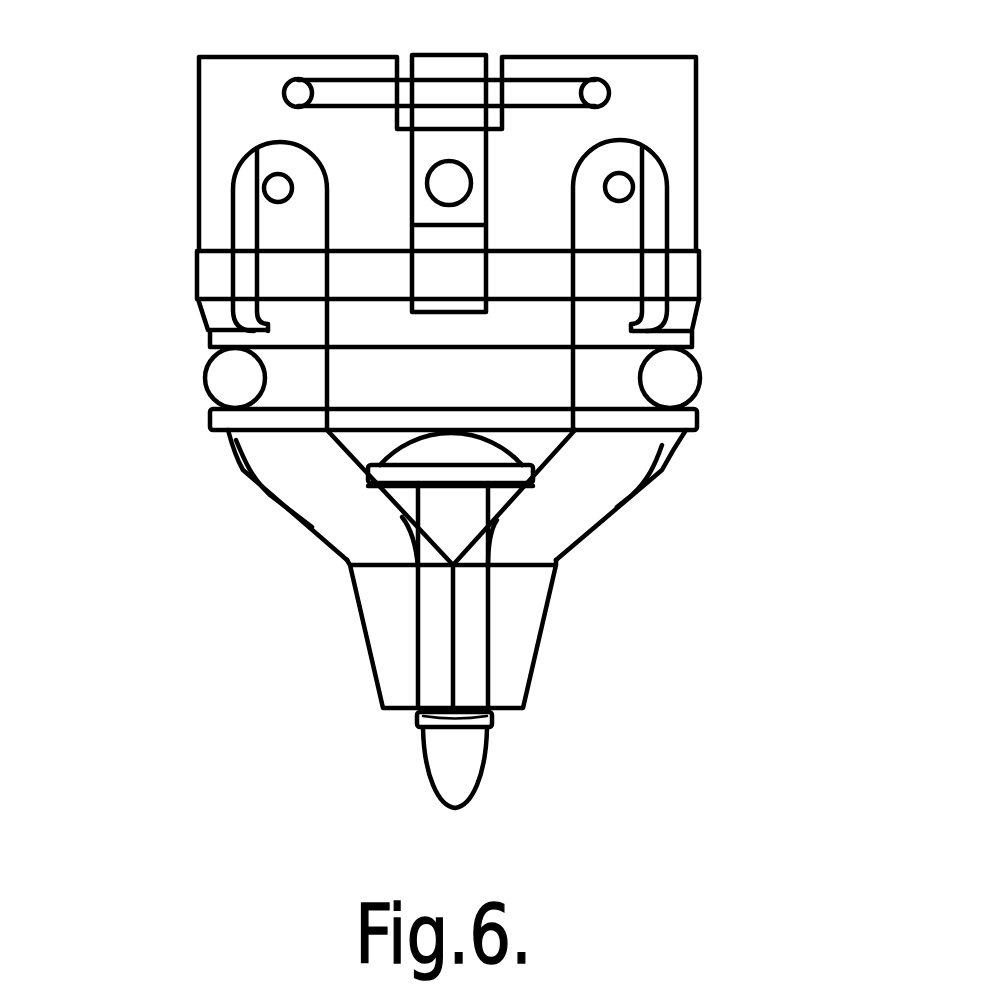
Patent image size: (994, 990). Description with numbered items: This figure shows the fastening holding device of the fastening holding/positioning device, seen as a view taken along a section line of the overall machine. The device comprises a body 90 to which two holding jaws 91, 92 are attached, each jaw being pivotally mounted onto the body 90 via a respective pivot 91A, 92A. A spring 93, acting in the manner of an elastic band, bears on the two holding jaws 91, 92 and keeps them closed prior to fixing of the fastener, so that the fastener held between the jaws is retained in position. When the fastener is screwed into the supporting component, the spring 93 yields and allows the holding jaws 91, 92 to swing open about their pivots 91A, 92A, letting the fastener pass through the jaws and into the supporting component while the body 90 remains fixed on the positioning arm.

The body 90 is at (673, 130).
The holding jaw 91 is at (600, 482).
The holding jaw 92 is at (310, 489).
The pivot 91A is at (620, 188).
The pivot 92A is at (278, 188).
The spring 93 is at (700, 367).